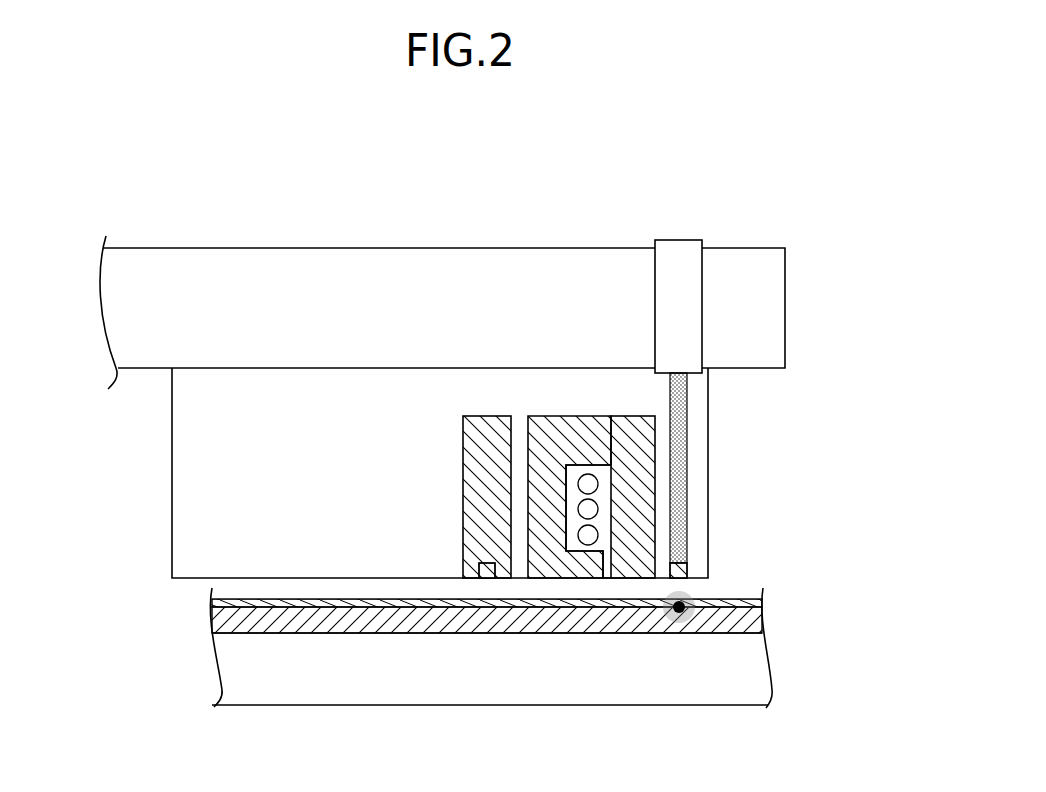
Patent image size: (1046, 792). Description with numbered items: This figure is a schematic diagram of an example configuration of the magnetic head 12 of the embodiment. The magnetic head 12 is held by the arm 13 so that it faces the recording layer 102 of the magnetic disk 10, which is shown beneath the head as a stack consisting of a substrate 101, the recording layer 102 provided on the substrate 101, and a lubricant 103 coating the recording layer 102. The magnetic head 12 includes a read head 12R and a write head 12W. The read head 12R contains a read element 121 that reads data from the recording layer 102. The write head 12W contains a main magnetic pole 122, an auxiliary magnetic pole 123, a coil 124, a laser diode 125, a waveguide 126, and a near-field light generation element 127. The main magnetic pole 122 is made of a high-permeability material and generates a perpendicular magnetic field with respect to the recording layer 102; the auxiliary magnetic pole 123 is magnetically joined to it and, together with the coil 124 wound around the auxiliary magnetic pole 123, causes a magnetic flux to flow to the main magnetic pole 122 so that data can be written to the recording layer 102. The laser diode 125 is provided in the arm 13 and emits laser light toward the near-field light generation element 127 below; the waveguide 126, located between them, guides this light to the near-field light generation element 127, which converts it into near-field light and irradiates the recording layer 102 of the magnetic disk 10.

The magnetic disk 10 is at (521, 617).
The substrate 101 is at (757, 678).
The recording layer 102 is at (760, 620).
The lubricant 103 is at (760, 604).
The magnetic head 12 is at (152, 476).
The read head 12R is at (477, 392).
The write head 12W is at (655, 387).
The read element 121 is at (486, 564).
The main magnetic pole 122 is at (643, 452).
The auxiliary magnetic pole 123 is at (593, 435).
The coil 124 is at (582, 460).
The laser diode 125 is at (688, 240).
The waveguide 126 is at (680, 470).
The near-field light generation element 127 is at (686, 572).
The arm 13 is at (235, 221).